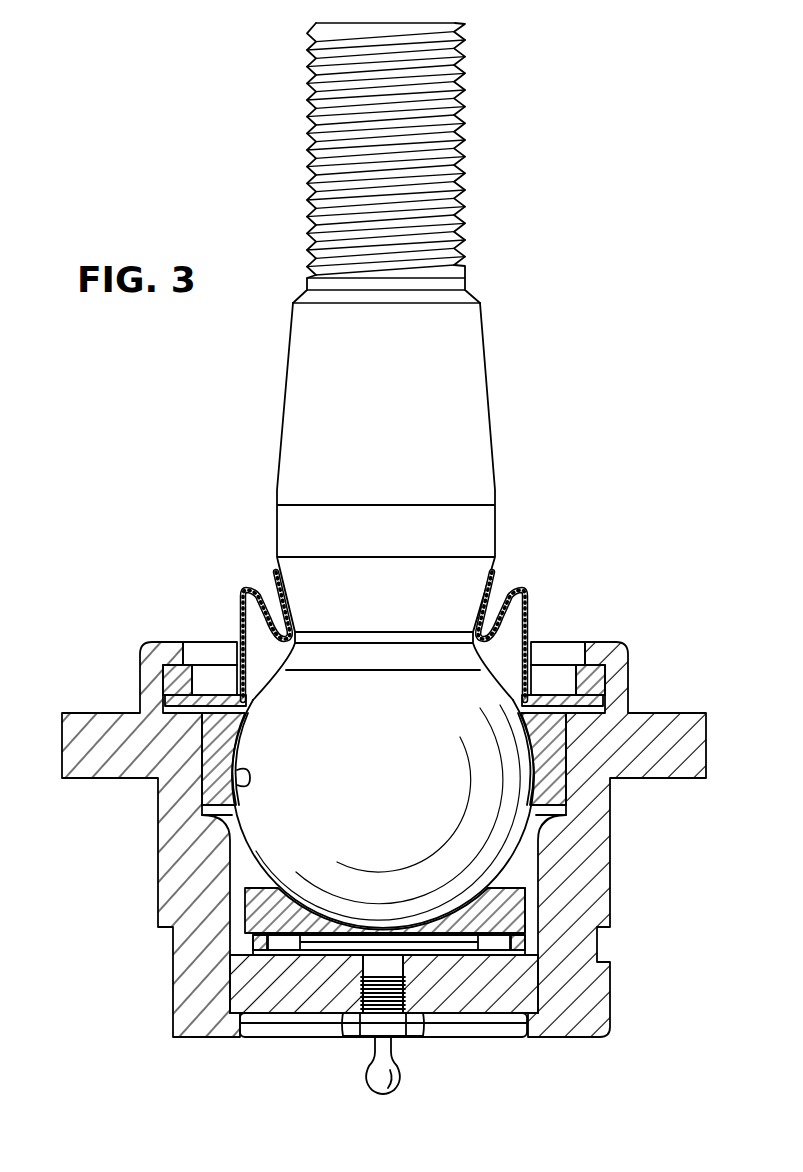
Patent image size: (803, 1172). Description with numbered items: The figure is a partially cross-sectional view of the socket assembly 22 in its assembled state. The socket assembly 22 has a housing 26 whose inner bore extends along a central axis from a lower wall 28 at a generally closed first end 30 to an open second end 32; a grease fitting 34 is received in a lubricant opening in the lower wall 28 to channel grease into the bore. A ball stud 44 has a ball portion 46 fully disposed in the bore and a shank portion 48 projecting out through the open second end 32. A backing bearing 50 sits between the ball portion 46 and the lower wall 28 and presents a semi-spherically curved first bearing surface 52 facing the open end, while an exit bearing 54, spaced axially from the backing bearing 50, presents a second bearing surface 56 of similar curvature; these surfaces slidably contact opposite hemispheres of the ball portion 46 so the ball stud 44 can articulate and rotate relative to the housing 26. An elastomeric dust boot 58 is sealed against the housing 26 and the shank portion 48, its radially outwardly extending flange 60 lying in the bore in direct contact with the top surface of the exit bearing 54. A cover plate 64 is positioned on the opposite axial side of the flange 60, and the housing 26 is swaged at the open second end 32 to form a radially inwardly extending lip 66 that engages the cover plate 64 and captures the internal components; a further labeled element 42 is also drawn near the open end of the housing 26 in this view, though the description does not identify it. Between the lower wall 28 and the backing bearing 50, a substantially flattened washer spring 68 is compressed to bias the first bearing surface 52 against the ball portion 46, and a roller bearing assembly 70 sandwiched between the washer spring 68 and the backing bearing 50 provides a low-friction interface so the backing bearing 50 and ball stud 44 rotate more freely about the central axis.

The socket assembly 22 is at (592, 310).
The housing 26 is at (124, 843).
The lower wall 28 is at (295, 998).
The first end 30 is at (527, 957).
The second end 32 is at (570, 642).
The grease fitting 34 is at (388, 1082).
The retaining ring 42 is at (605, 695).
The ball stud 44 is at (512, 410).
The ball portion 46 is at (371, 807).
The shank portion 48 is at (300, 410).
The backing bearing 50 is at (515, 908).
The first bearing surface 52 is at (300, 875).
The exit bearing 54 is at (228, 745).
The second bearing surface 56 is at (232, 785).
The dust boot 58 is at (525, 596).
The flange 60 is at (140, 713).
The cover plate 64 is at (170, 665).
The lip 66 is at (184, 641).
The washer spring 68 is at (255, 955).
The roller bearing assembly 70 is at (240, 943).